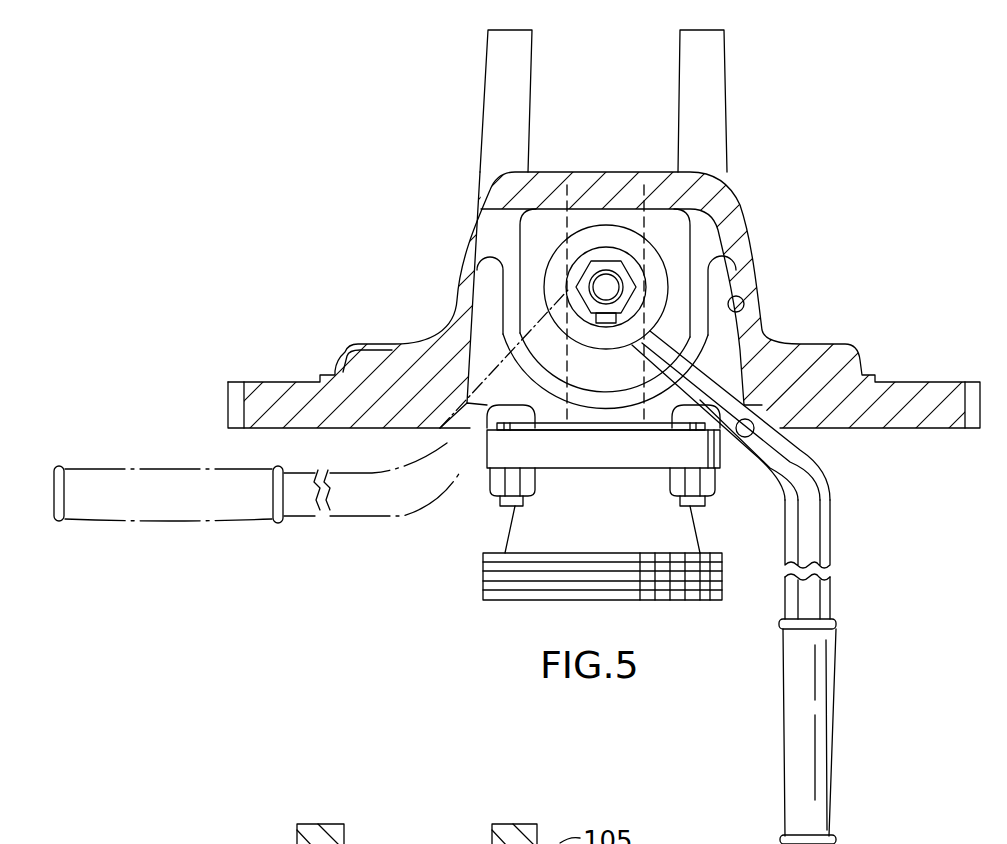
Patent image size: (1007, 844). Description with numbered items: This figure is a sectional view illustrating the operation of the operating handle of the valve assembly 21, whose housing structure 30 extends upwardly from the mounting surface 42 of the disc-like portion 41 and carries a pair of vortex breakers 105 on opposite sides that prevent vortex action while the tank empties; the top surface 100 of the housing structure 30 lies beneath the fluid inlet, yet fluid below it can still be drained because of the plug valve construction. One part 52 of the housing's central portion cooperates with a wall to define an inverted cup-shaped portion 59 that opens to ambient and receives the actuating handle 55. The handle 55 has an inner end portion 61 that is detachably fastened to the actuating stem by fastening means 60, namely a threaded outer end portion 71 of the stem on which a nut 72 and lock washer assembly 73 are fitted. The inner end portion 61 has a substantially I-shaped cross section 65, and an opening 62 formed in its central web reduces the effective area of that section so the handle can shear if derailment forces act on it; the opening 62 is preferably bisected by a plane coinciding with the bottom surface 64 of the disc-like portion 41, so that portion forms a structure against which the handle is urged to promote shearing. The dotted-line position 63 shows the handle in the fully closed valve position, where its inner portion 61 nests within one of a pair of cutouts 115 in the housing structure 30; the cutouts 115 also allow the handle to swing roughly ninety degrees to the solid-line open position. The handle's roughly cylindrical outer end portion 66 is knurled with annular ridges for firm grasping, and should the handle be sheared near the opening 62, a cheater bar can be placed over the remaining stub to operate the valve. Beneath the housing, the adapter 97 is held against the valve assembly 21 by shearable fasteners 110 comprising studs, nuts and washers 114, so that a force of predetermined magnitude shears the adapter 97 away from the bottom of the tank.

The valve assembly 21 is at (872, 108).
The housing structure 30 is at (750, 224).
The disc-like portion 41 is at (228, 385).
The mounting surface 42 is at (300, 382).
The part of the central portion 52 is at (462, 222).
The actuating handle 55 is at (832, 538).
The inverted cup-shaped portion 59 is at (746, 304).
The detachable fastening means 60 is at (612, 212).
The inner end portion of the handle 61 is at (695, 365).
The opening 62 is at (745, 438).
The handle position 63 is at (372, 522).
The bottom surface 64 is at (895, 432).
The I-shaped cross section 65 is at (836, 496).
The outer end portion 66 is at (833, 675).
The threaded outer end portion 71 is at (598, 282).
The nut 72 is at (616, 282).
The lock washer assembly 73 is at (604, 320).
The adapter 97 is at (503, 540).
The top surface 100 is at (700, 180).
The vortex breakers 105 is at (495, 75).
The shearable fasteners 110 is at (494, 504).
The washers 114 is at (490, 478).
The cutouts 115 is at (480, 428).